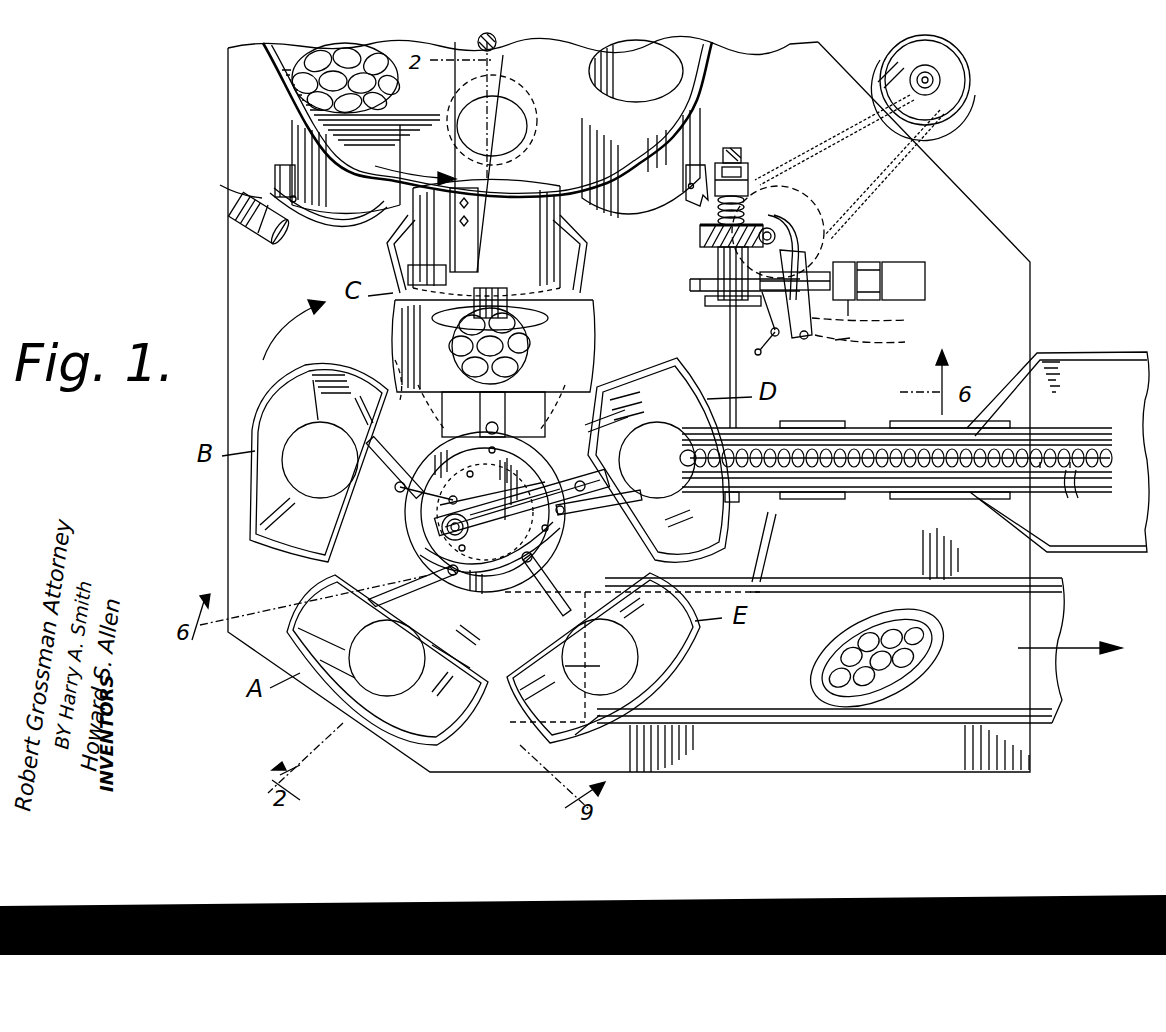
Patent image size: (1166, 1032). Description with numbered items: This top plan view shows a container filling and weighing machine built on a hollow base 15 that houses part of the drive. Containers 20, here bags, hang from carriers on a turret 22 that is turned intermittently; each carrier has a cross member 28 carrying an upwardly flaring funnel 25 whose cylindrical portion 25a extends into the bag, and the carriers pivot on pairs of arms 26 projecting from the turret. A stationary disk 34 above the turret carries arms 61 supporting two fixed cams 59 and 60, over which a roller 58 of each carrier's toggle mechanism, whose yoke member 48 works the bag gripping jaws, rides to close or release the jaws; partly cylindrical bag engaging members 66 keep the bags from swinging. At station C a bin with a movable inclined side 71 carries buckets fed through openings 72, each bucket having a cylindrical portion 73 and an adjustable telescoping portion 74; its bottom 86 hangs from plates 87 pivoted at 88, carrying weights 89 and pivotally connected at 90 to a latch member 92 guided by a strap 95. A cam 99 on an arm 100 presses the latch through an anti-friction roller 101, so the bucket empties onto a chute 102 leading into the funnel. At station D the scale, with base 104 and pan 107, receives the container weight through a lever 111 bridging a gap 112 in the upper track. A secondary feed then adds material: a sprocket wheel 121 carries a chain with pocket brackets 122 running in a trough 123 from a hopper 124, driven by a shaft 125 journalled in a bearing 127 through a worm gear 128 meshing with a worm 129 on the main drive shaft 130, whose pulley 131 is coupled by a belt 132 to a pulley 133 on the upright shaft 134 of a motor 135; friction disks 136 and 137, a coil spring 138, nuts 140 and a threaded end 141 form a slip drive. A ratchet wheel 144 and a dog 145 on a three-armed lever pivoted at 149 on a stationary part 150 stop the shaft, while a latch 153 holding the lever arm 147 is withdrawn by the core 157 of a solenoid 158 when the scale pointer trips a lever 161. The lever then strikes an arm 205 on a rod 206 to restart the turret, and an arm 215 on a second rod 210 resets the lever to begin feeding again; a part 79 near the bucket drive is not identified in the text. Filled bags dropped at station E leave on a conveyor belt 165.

The base 15 is at (992, 246).
The containers 20 is at (915, 682).
The turret or rotary table 22 is at (400, 362).
The chute or funnel 25 is at (660, 368).
The cylindrical portion 25a is at (353, 559).
The pairs of arms 26 is at (318, 528).
The cross member 28 is at (597, 672).
The stationary disk or support 34 is at (470, 472).
The yoke member 48 is at (560, 650).
The roller 58 is at (500, 429).
The cam 59 is at (605, 546).
The cam 60 is at (428, 558).
The arms 61 is at (493, 523).
The bag engaging members 66 is at (652, 622).
The movable circular inclined bottom or side 71 is at (270, 60).
The openings 72 is at (362, 110).
The cylindrical portion 73 is at (525, 150).
The telescoping portion 74 is at (538, 238).
The hopper shaft 79 is at (457, 78).
The bottoms 86 is at (440, 336).
The pair of plates 87 is at (226, 184).
The pivot 88 is at (300, 202).
The weights 89 is at (240, 211).
The pivotal connection 90 is at (272, 238).
The latch member 92 is at (278, 168).
The strap 95 is at (298, 176).
The cam 99 is at (408, 275).
The arm 100 is at (505, 48).
The anti-friction roller 101 is at (582, 260).
The chute 102 is at (583, 282).
The base 104 is at (525, 470).
The platform or pan 107 is at (517, 448).
The lever or beam 111 is at (522, 504).
The gap 112 is at (590, 430).
The sprocket wheel 121 is at (742, 440).
The brackets 122 is at (1082, 494).
The trough 123 is at (1076, 440).
The hopper or bin 124 is at (1125, 356).
The shaft 125 is at (775, 370).
The bearing 127 is at (730, 336).
The worm gear 128 is at (716, 253).
The worm 129 is at (790, 200).
The shaft 130 is at (800, 213).
The pulley 131 is at (830, 228).
The belt 132 is at (875, 187).
The pulley 133 is at (966, 66).
The upright shaft 134 is at (941, 81).
The motor 135 is at (970, 98).
The friction drive disk 136 is at (718, 270).
The friction drive disk 137 is at (700, 233).
The coil spring 138 is at (755, 211).
The nuts 140 is at (748, 172).
The threaded end 141 is at (735, 148).
The ratchet wheel 144 is at (690, 286).
The dog 145 is at (745, 310).
The arm 147 is at (830, 276).
The pivot 149 is at (840, 260).
The stationary part 150 is at (762, 349).
The latch 153 is at (850, 300).
The core 157 is at (898, 262).
The solenoid or electromagnet 158 is at (926, 281).
The lever 161 is at (545, 528).
The conveyor belt 165 is at (1065, 612).
The arm 205 is at (906, 322).
The shaft or rod 206 is at (906, 344).
The second upright rod or shaft 210 is at (815, 337).
The laterally extending arm 215 is at (848, 340).